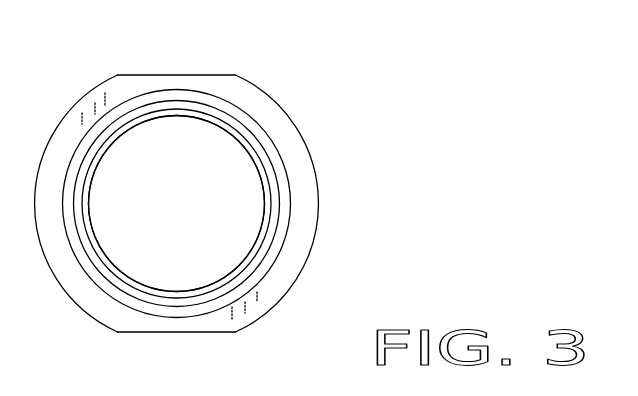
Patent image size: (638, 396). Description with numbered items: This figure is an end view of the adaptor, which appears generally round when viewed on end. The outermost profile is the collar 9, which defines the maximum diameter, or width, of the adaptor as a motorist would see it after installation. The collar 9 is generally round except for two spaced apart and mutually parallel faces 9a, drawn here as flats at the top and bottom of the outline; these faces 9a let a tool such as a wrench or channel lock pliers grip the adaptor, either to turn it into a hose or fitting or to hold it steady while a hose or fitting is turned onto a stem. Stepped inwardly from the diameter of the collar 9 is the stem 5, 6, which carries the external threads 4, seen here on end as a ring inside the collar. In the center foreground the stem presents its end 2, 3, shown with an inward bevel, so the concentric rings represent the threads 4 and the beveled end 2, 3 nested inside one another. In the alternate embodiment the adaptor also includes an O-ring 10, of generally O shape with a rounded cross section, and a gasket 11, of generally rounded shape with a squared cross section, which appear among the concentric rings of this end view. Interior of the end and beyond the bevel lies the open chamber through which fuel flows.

The first end 2 is at (278, 190).
The second end 3 is at (177, 204).
The external threads 4 is at (285, 233).
The first stem 5 is at (265, 273).
The second stem 6 is at (133, 248).
The collar 9 is at (292, 127).
The faces 9a is at (186, 75).
The O-ring 10 is at (282, 162).
The gasket 11 is at (197, 158).